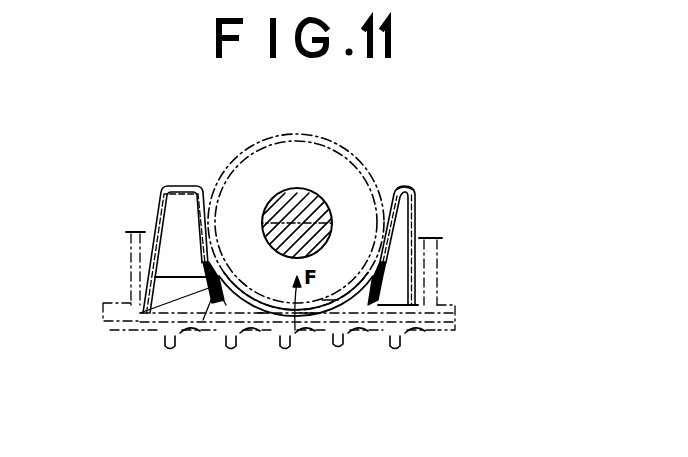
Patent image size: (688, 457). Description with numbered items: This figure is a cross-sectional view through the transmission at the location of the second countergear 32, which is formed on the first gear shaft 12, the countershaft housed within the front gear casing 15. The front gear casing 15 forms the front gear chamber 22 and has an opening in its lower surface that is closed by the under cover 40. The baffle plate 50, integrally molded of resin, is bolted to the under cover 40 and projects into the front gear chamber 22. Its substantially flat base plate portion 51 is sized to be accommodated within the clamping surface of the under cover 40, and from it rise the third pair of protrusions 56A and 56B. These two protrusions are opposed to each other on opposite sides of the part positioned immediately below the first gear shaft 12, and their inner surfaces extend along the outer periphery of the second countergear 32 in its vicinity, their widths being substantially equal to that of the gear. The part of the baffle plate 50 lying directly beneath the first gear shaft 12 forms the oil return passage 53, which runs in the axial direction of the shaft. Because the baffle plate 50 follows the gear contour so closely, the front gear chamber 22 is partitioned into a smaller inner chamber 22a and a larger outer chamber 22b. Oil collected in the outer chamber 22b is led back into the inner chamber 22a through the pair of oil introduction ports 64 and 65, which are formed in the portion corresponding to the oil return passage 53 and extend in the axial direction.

The first gear shaft 12 is at (318, 205).
The front gear casing 15 is at (445, 268).
The front gear chamber 22 is at (186, 410).
The inner chamber 22a is at (140, 313).
The outer chamber 22b is at (203, 320).
The second countergear 32 is at (268, 135).
The under cover 40 is at (424, 346).
The baffle plate 50 is at (418, 186).
The base plate portion 51 is at (262, 317).
The oil return passage 53 is at (330, 305).
The third protrusion 56A is at (416, 196).
The third protrusion 56B is at (164, 186).
The oil introduction port 64 is at (306, 318).
The oil introduction port 65 is at (222, 297).